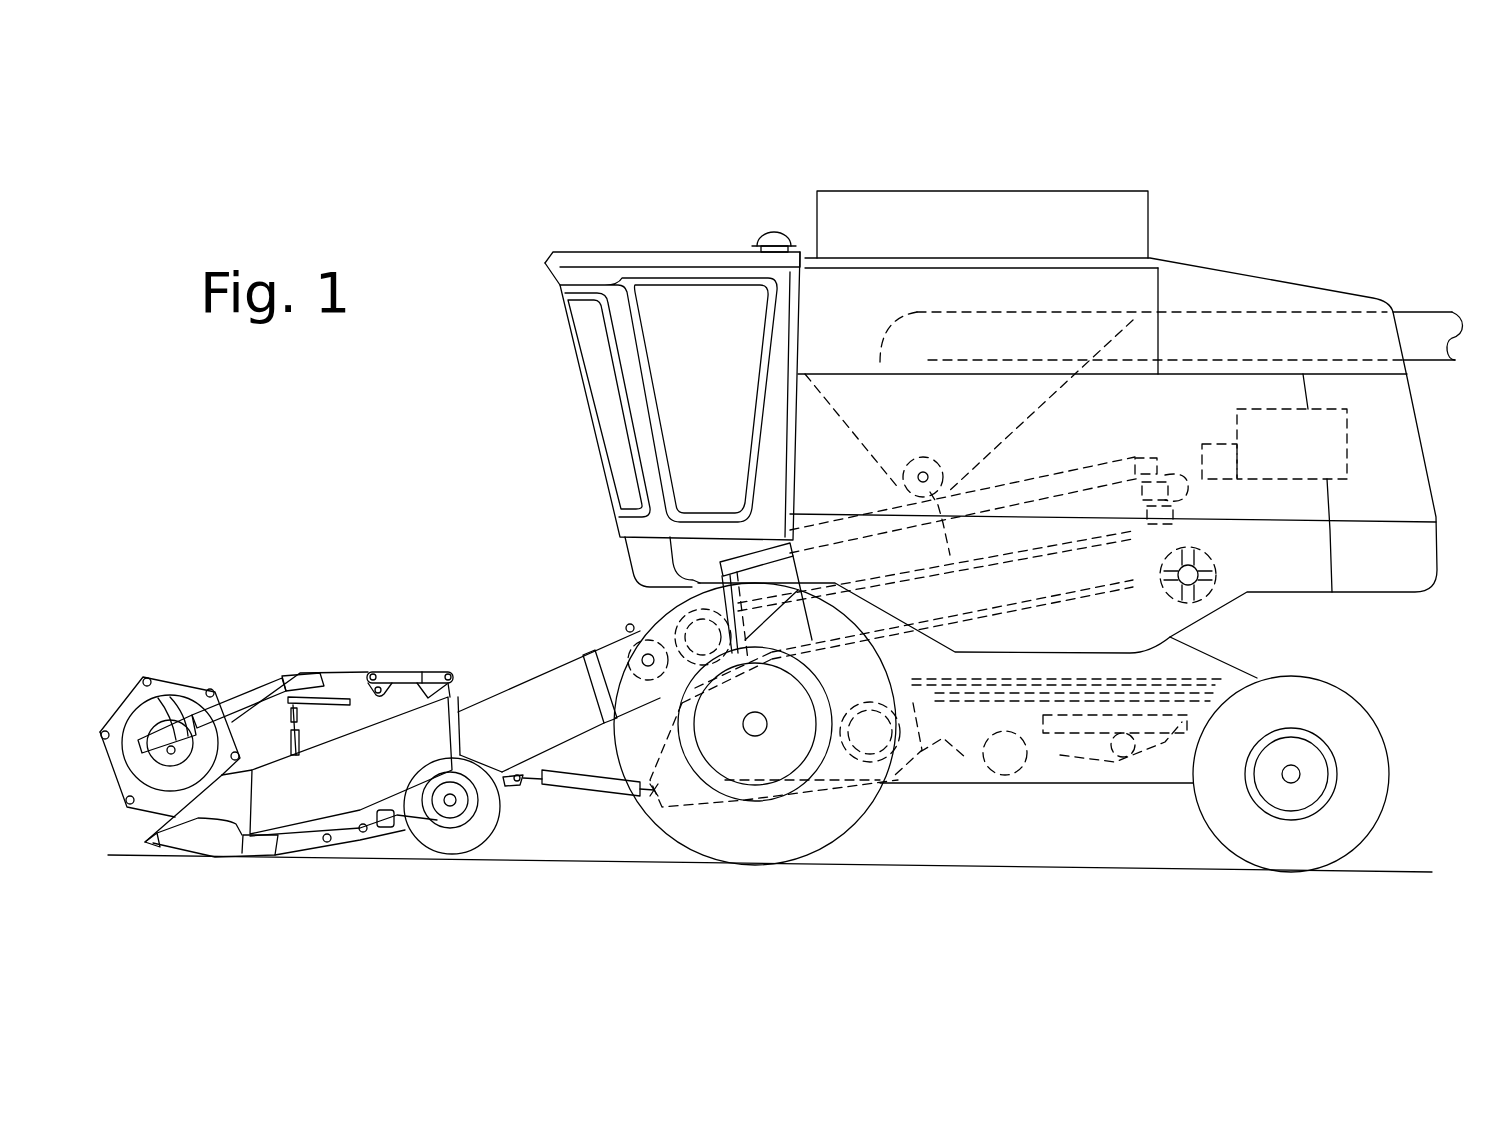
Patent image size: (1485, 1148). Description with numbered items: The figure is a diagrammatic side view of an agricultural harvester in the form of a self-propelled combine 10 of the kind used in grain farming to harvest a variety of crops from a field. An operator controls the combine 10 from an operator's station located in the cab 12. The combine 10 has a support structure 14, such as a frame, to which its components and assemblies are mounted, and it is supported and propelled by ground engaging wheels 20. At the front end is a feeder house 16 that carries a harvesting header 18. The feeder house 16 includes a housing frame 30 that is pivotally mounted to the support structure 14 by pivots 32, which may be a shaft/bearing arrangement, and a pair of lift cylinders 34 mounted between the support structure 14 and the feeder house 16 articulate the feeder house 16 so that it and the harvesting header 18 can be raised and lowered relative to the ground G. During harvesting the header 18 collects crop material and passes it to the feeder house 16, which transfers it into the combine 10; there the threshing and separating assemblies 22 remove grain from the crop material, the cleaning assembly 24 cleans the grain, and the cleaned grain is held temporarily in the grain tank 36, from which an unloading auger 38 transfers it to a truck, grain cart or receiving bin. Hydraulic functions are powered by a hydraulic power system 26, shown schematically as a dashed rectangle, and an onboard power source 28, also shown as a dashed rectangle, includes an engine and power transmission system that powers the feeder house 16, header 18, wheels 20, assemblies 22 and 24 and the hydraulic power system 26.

The self-propelled combine 10 is at (360, 195).
The cab 12 is at (668, 250).
The support structure 14 is at (907, 658).
The feeder house 16 is at (521, 664).
The harvesting header 18 is at (395, 617).
The ground engaging wheels 20 is at (870, 828).
The threshing and separating assemblies 22 is at (1156, 616).
The cleaning assembly 24 is at (1186, 665).
The hydraulic power system 26 is at (1216, 479).
The onboard power source 28 is at (1347, 432).
The housing frame 30 is at (540, 715).
The pivots 32 is at (643, 636).
The lift cylinders 34 is at (562, 802).
The grain tank 36 is at (1162, 222).
The unloading auger 38 is at (1417, 310).
The ground G is at (345, 862).